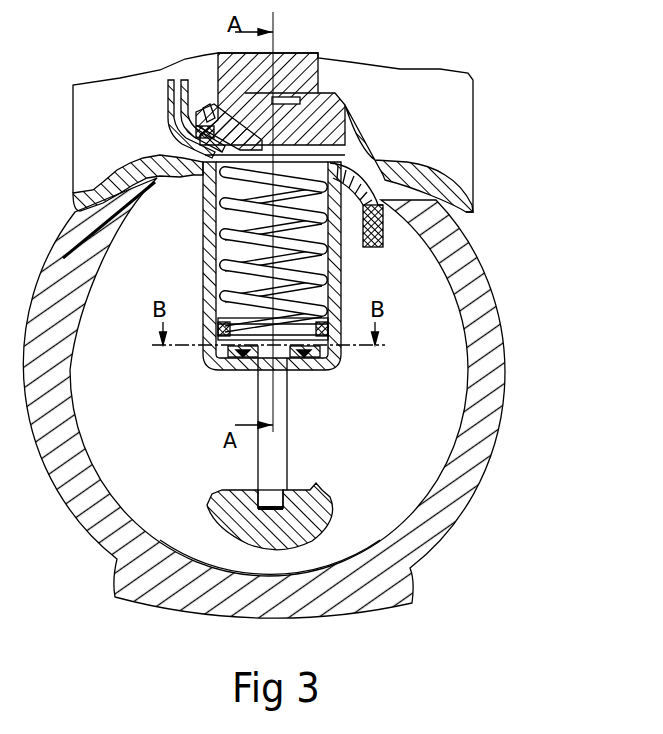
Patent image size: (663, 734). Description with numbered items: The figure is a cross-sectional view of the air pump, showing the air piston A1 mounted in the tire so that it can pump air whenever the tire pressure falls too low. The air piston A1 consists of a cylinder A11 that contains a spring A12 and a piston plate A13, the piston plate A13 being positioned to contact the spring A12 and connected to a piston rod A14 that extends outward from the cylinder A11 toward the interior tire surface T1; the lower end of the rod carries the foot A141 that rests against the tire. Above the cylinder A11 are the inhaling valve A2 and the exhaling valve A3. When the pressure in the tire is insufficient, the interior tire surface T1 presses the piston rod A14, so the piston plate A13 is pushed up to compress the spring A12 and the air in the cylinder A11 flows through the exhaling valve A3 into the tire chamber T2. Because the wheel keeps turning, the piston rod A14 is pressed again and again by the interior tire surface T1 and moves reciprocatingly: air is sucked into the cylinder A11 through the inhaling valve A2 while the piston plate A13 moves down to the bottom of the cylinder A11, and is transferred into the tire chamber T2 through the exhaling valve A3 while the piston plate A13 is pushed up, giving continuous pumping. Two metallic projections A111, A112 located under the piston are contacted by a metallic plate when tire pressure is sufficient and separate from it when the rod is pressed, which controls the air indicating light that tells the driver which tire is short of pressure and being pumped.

The interior tire surface T1 is at (182, 588).
The tire chamber T2 is at (370, 533).
The air piston A1 is at (333, 292).
The cylinder A11 is at (318, 165).
The spring A12 is at (307, 247).
The piston plate A13 is at (220, 353).
The metallic projection A111 is at (240, 357).
The metallic projection A112 is at (305, 357).
The piston rod A14 is at (275, 442).
The valve head A141 is at (272, 538).
The inhaling valve A2 is at (170, 90).
The exhaling valve A3 is at (367, 217).